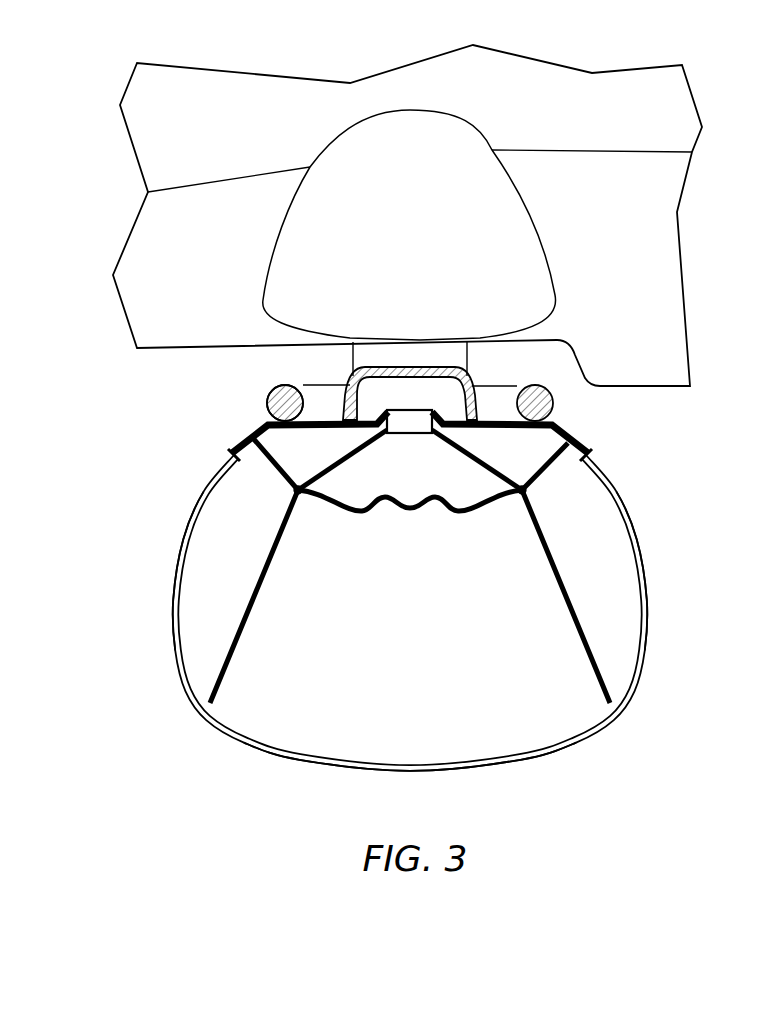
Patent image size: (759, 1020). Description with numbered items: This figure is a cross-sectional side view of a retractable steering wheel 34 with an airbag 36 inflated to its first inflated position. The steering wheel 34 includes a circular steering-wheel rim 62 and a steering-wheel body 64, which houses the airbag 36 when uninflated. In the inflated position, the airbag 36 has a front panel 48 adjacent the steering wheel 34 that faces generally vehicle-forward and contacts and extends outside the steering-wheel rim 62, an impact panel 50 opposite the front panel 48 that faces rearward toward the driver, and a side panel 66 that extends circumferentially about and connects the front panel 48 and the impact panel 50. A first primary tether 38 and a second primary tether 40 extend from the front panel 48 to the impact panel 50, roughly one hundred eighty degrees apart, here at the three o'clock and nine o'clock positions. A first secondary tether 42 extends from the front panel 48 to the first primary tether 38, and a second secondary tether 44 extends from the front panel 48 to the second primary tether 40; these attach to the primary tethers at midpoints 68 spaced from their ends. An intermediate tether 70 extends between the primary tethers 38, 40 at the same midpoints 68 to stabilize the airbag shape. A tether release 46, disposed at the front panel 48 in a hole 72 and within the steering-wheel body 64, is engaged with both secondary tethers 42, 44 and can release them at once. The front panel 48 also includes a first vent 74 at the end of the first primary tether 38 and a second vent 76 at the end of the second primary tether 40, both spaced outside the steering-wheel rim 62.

The retractable steering wheel 34 is at (267, 402).
The airbag 36 is at (650, 648).
The first primary tether 38 is at (538, 518).
The second primary tether 40 is at (283, 520).
The first secondary tether 42 is at (484, 466).
The second secondary tether 44 is at (338, 466).
The tether release 46 is at (405, 437).
The front panel 48 is at (494, 418).
The impact panel 50 is at (352, 768).
The steering-wheel rim 62 is at (285, 385).
The steering-wheel body 64 is at (400, 365).
The side panel 66 is at (178, 582).
The midpoints 68 is at (300, 497).
The intermediate tether 70 is at (405, 513).
The hole 72 is at (432, 410).
The first vent 74 is at (580, 443).
The second vent 76 is at (235, 440).